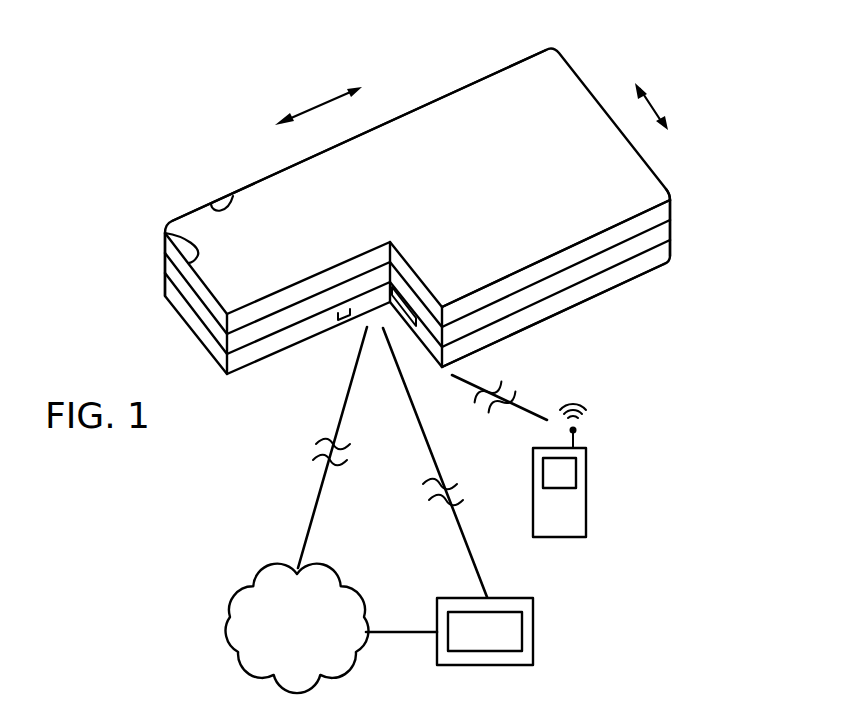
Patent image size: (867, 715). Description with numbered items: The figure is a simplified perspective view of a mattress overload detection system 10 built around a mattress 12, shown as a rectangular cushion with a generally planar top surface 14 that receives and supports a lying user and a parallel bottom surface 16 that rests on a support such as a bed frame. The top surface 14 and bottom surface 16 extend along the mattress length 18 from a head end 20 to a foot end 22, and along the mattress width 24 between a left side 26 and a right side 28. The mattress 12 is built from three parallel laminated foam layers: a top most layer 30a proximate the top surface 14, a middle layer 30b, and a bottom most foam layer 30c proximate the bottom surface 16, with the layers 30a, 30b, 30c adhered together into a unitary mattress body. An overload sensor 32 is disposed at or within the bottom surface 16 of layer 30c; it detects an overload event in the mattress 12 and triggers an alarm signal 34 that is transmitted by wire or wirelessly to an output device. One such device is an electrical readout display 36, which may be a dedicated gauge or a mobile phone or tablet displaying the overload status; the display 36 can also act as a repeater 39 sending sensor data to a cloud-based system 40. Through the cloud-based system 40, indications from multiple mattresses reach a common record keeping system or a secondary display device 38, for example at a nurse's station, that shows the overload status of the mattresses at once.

The mattress overload detection system 10 is at (407, 60).
The mattress 12 is at (493, 72).
The top surface 14 is at (489, 183).
The bottom surface 16 is at (609, 292).
The mattress length 18 is at (318, 106).
The head end 20 is at (661, 171).
The foot end 22 is at (165, 233).
The mattress width 24 is at (657, 108).
The left side 26 is at (232, 194).
The right side 28 is at (598, 236).
The top most layer 30a is at (650, 222).
The middle foam layer 30b is at (653, 242).
The bottom most foam layer 30c is at (637, 268).
The overload sensor 32 is at (343, 322).
The alarm signal 34 is at (512, 393).
The electrical readout display 36 is at (586, 508).
The display device 38 is at (533, 632).
The repeater 39 is at (576, 472).
The cloud-based system 40 is at (284, 640).